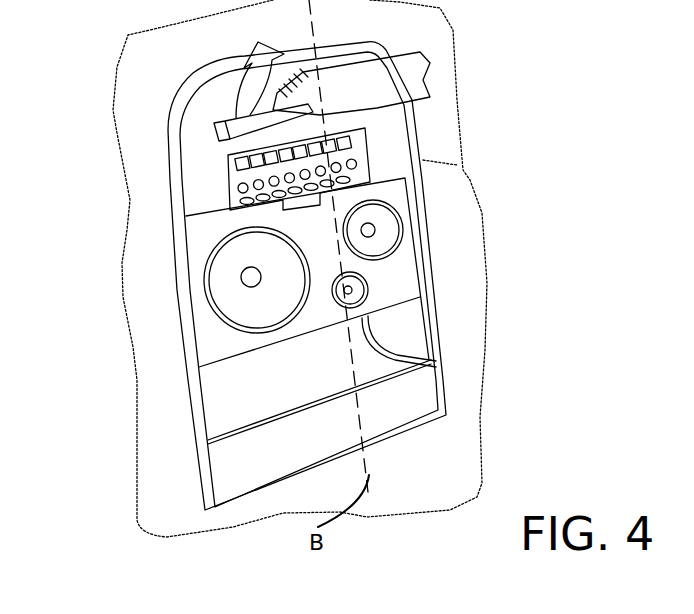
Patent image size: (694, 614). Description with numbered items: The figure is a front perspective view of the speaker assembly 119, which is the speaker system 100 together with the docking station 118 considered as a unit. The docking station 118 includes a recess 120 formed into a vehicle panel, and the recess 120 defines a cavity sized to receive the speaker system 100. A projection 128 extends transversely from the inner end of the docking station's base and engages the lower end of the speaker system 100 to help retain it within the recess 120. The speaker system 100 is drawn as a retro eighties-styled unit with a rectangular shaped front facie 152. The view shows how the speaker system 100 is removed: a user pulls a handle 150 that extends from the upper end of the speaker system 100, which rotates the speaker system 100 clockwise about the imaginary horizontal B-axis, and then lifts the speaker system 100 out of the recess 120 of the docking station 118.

The speaker system 100 is at (410, 152).
The docking station 118 is at (178, 370).
The speaker assembly 119 is at (497, 63).
The recess 120 is at (412, 341).
The projection 128 is at (409, 395).
The handle 150 is at (235, 117).
The front facie 152 is at (407, 262).